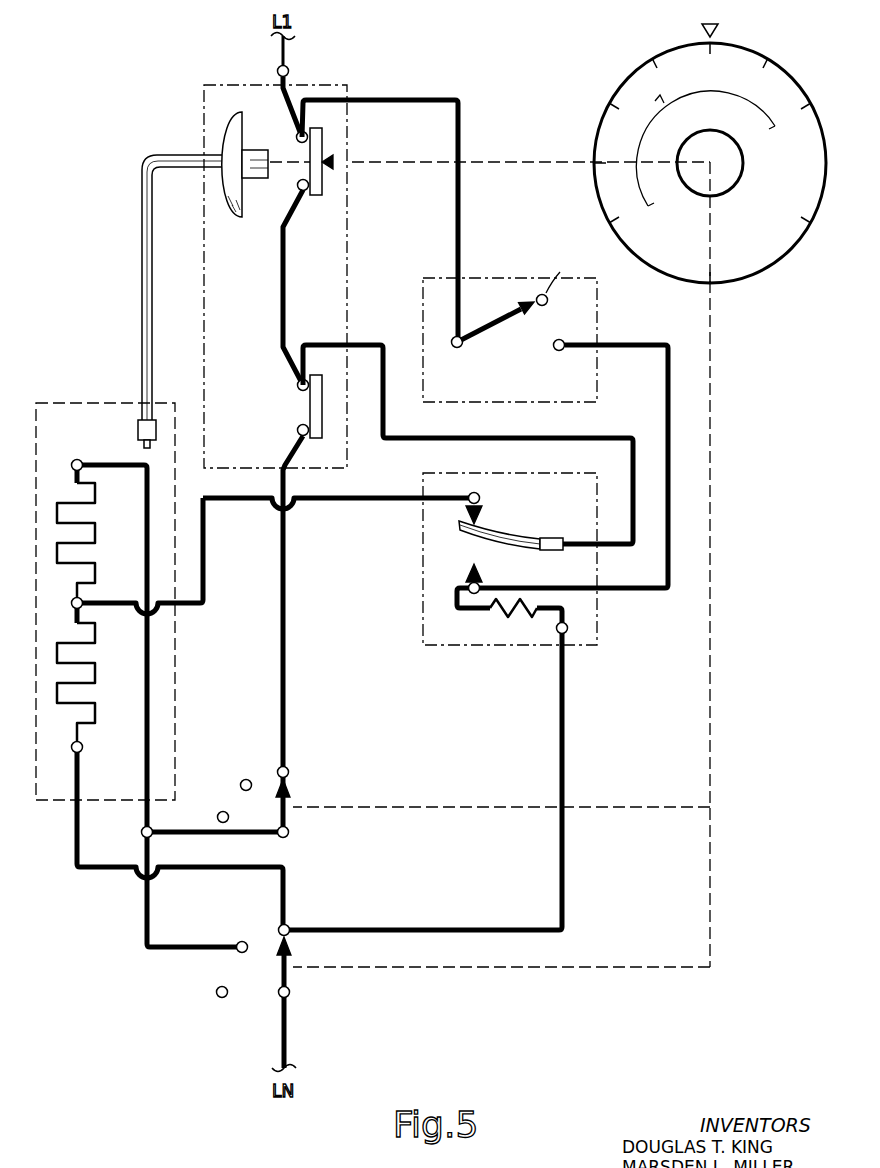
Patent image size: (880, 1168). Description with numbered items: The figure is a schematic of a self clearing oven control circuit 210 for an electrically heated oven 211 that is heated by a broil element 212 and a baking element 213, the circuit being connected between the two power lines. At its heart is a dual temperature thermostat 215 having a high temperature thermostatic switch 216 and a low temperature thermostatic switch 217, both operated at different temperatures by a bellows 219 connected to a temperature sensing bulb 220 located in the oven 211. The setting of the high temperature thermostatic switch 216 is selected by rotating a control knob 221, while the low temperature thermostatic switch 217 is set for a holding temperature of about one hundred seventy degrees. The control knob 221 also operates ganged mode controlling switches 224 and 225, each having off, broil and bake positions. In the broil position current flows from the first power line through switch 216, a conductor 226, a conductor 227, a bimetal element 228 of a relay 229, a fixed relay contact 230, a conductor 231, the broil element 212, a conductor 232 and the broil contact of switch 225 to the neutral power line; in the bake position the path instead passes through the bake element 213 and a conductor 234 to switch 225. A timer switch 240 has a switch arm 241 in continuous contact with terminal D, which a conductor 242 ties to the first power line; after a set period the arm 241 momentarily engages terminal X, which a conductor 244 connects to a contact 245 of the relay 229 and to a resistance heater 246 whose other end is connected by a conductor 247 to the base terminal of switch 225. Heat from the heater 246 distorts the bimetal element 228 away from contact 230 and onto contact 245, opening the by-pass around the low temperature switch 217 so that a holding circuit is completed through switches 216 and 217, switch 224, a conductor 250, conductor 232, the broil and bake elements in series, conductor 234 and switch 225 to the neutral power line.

The self clearing oven control circuit 210 is at (506, 156).
The electrically heated oven 211 is at (99, 401).
The broil element 212 is at (97, 533).
The baking element 213 is at (97, 673).
The dual temperature thermostat 215 is at (201, 84).
The high temperature thermostatic switch 216 is at (322, 137).
The low temperature thermostatic switch 217 is at (322, 436).
The bellows 219 is at (245, 127).
The temperature sensing bulb 220 is at (157, 418).
The control knob 221 is at (634, 70).
The mode controlling switch 224 is at (290, 798).
The mode controlling switch 225 is at (289, 982).
The conductor 226 is at (286, 282).
The conductor 227 is at (592, 438).
The bimetal element 228 is at (527, 538).
The relay 229 is at (597, 622).
The fixed relay contact 230 is at (481, 498).
The conductor 231 is at (288, 506).
The conductor 232 is at (145, 767).
The conductor 234 is at (277, 867).
The timer switch 240 is at (476, 278).
The switch arm 241 is at (497, 328).
The conductor 242 is at (461, 200).
The conductor 244 is at (620, 345).
The contact 245 is at (481, 582).
The resistance heater 246 is at (500, 617).
The conductor 247 is at (565, 727).
The conductor 250 is at (183, 834).